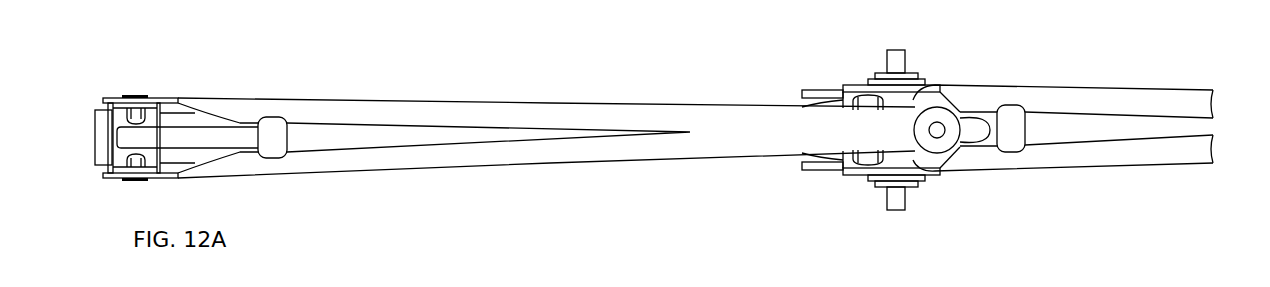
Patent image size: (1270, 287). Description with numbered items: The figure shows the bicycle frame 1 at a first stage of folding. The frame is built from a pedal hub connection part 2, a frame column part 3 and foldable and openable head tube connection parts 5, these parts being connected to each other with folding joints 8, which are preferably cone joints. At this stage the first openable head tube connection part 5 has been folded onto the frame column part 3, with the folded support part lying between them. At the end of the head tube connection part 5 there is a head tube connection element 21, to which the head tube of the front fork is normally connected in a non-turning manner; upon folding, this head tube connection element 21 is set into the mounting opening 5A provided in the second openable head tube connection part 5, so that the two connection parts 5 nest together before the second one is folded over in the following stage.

The bicycle frame 1 is at (558, 193).
The pedal hub connection part 2 is at (843, 87).
The frame column part 3 is at (808, 100).
The head tube connection part 5 is at (495, 122).
The mounting opening 5A is at (993, 118).
The head tube connection element 21 is at (947, 150).
The folding joint 8 is at (766, 283).